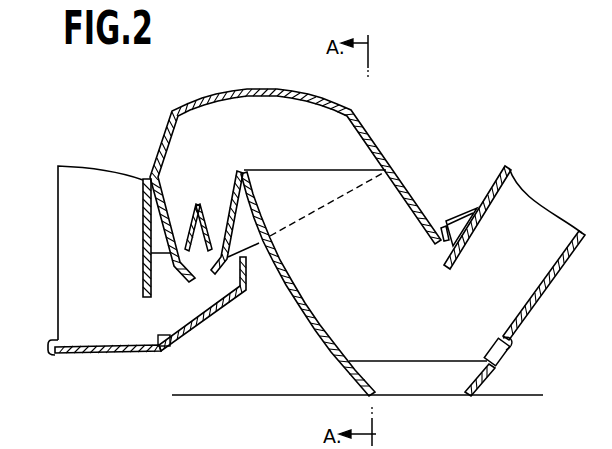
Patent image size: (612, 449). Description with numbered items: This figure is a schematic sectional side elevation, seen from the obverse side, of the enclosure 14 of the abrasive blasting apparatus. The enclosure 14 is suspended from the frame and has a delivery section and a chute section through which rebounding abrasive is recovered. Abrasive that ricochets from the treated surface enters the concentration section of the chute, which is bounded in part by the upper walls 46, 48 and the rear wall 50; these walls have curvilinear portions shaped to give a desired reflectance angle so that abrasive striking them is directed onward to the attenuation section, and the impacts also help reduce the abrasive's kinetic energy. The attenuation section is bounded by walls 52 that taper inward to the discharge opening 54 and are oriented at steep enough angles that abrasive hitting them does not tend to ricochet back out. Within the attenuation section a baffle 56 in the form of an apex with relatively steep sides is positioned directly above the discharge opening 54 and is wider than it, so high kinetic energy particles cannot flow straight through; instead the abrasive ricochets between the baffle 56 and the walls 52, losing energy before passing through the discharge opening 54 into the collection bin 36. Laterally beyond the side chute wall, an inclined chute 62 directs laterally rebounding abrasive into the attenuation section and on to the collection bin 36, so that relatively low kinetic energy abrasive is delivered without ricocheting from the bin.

The enclosure 14 is at (433, 352).
The collection bin 36 is at (137, 355).
The upper wall 46 is at (394, 176).
The upper wall 48 is at (253, 90).
The rear wall 50 is at (302, 312).
The walls 52 is at (148, 239).
The discharge opening 54 is at (206, 273).
The baffle 56 is at (197, 206).
The inclined chute 62 is at (268, 242).